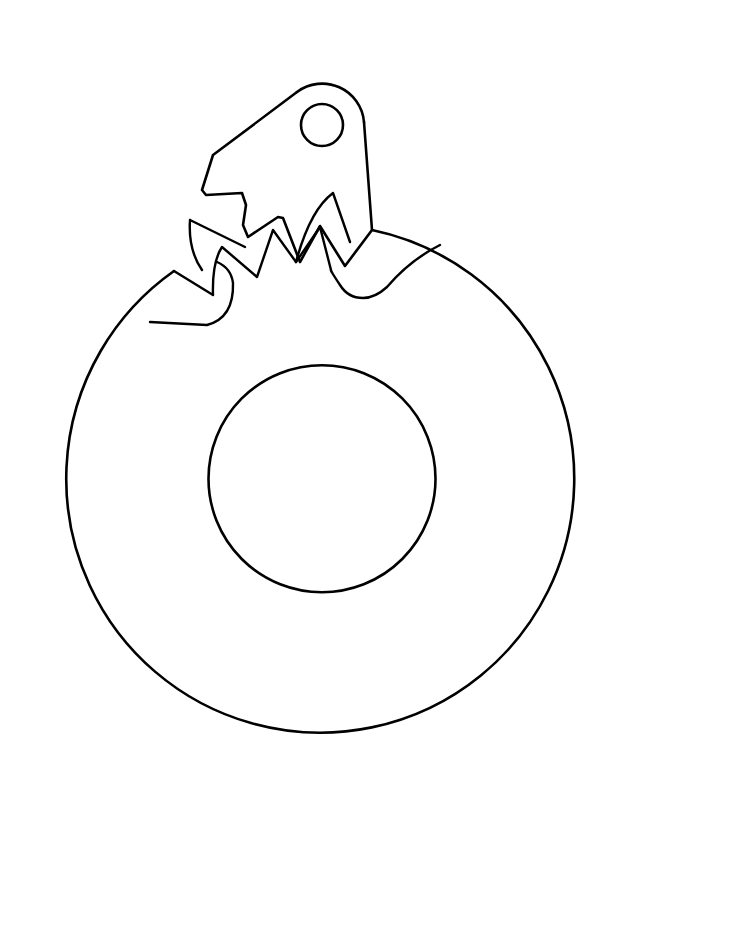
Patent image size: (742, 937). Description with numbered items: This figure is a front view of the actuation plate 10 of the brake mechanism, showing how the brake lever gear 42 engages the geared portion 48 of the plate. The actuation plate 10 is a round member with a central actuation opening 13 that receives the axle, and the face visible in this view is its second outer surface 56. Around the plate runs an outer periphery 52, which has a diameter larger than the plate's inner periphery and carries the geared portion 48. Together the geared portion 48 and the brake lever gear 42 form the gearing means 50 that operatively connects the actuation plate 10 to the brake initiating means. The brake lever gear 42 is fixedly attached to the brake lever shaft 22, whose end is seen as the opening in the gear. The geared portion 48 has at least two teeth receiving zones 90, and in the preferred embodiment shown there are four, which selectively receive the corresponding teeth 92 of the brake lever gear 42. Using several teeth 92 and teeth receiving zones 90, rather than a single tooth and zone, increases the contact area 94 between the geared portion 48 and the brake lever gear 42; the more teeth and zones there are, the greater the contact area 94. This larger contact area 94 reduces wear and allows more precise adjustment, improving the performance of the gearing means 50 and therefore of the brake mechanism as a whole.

The actuation plate 10 is at (550, 232).
The actuation opening 13 is at (339, 508).
The brake lever shaft 22 is at (322, 125).
The brake lever gear 42 is at (348, 103).
The geared portion 48 is at (150, 322).
The gearing means 50 is at (232, 115).
The outer periphery 52 is at (568, 410).
The second outer surface 56 is at (492, 345).
The teeth receiving zones 90 is at (190, 220).
The teeth 92 is at (333, 193).
The contact area 94 is at (440, 245).